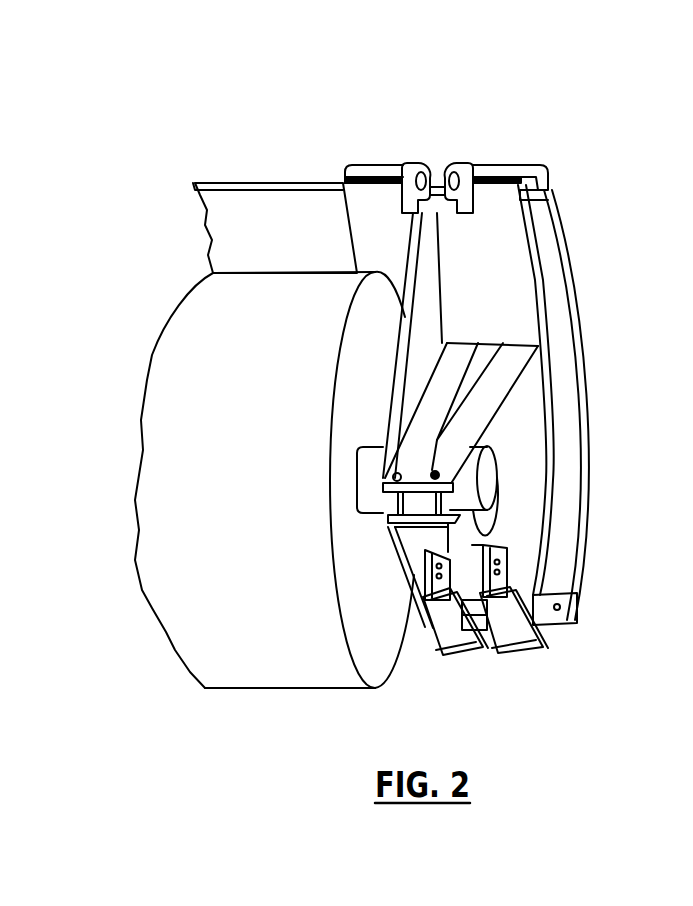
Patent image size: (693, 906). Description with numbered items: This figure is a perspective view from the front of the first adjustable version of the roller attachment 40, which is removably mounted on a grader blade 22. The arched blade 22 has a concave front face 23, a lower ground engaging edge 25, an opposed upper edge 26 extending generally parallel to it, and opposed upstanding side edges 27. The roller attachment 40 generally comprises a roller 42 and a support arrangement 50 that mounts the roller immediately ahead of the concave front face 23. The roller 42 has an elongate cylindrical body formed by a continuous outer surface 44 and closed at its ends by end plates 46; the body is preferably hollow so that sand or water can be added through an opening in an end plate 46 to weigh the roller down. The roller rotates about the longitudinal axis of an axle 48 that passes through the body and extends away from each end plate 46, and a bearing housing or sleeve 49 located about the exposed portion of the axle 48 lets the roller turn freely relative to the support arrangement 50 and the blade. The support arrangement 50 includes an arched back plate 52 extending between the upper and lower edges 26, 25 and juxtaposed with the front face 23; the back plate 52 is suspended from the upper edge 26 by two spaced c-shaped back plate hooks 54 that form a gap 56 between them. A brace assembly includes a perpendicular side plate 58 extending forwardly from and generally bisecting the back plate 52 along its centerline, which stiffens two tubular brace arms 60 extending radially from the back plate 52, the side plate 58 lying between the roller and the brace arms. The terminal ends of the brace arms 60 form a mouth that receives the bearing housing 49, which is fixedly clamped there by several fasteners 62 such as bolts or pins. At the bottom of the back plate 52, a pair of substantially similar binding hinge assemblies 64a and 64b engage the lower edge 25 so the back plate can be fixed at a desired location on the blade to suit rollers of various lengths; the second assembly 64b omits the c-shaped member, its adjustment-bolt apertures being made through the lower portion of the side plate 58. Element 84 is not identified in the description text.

The blade 22 is at (237, 175).
The concave front face 23 is at (289, 243).
The lower ground engaging edge 25 is at (556, 622).
The upper edge 26 is at (287, 183).
The upstanding side edges 27 is at (585, 325).
The roller attachment 40 is at (628, 198).
The roller 42 is at (283, 700).
The outer surface 44 is at (269, 494).
The end plates 46 is at (381, 578).
The axle 48 is at (535, 470).
The bearing housing 49 is at (473, 505).
The support arrangement 50 is at (441, 314).
The back plate 52 is at (394, 252).
The back plate hooks 54 is at (352, 167).
The gap 56 is at (432, 155).
The side plate 58 is at (437, 307).
The brace arms 60 is at (508, 367).
The fasteners 62 is at (419, 490).
The binding hinge assembly 64a is at (524, 670).
The binding hinge assembly 64b is at (463, 668).
The hinge clips 84 is at (408, 168).